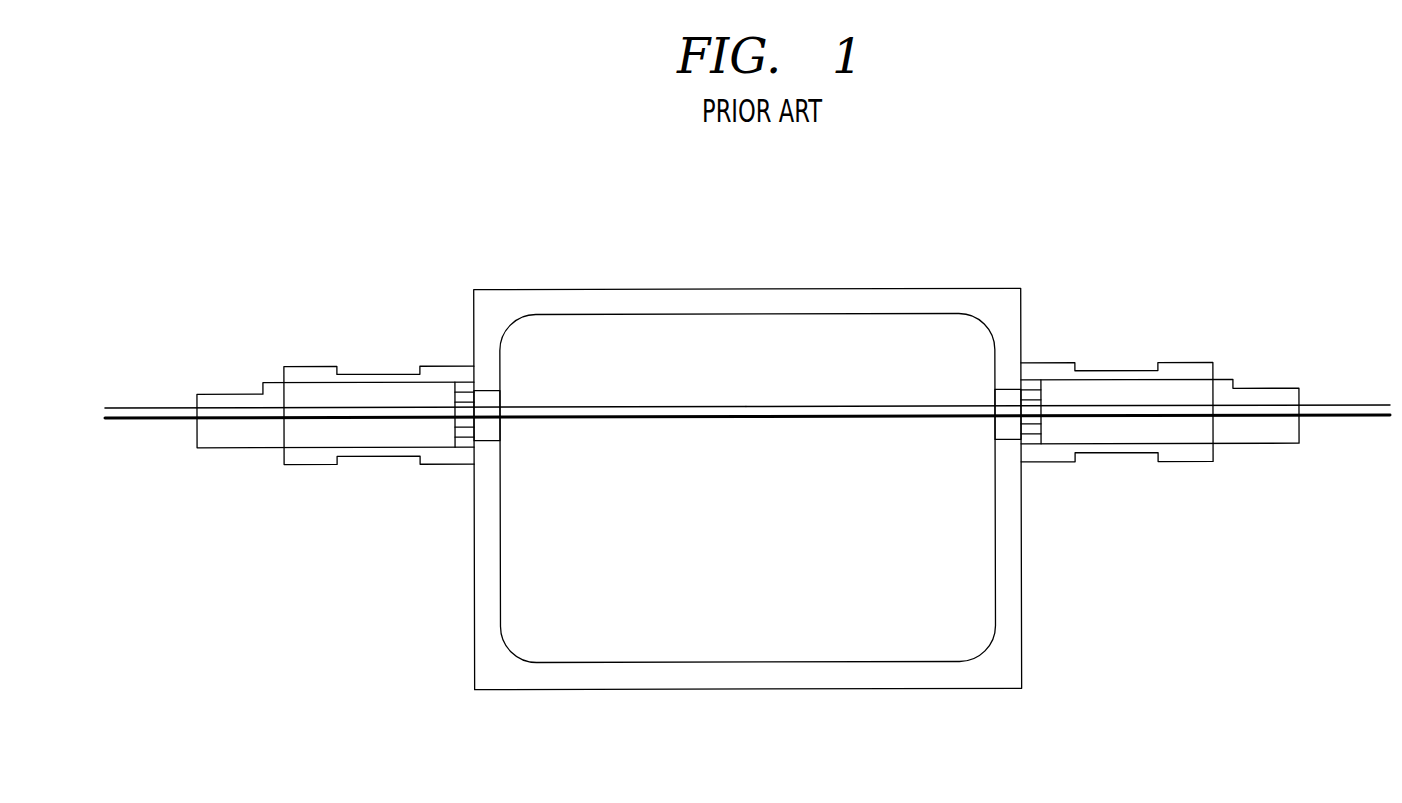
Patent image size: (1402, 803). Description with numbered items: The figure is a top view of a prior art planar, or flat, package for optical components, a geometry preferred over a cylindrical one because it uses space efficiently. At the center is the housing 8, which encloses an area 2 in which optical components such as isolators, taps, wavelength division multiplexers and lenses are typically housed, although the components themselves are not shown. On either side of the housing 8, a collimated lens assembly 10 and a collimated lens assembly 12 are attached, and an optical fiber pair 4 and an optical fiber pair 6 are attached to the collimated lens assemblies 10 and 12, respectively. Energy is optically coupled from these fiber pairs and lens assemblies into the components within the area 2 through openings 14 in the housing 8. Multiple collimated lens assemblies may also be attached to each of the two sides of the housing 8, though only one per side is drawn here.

The optical device 2 is at (643, 600).
The input optical fiber 4 is at (150, 421).
The output optical fiber 6 is at (1345, 418).
The housing 8 is at (800, 303).
The input connector 10 is at (379, 368).
The output connector 12 is at (1118, 362).
The ferrule 14 is at (487, 413).